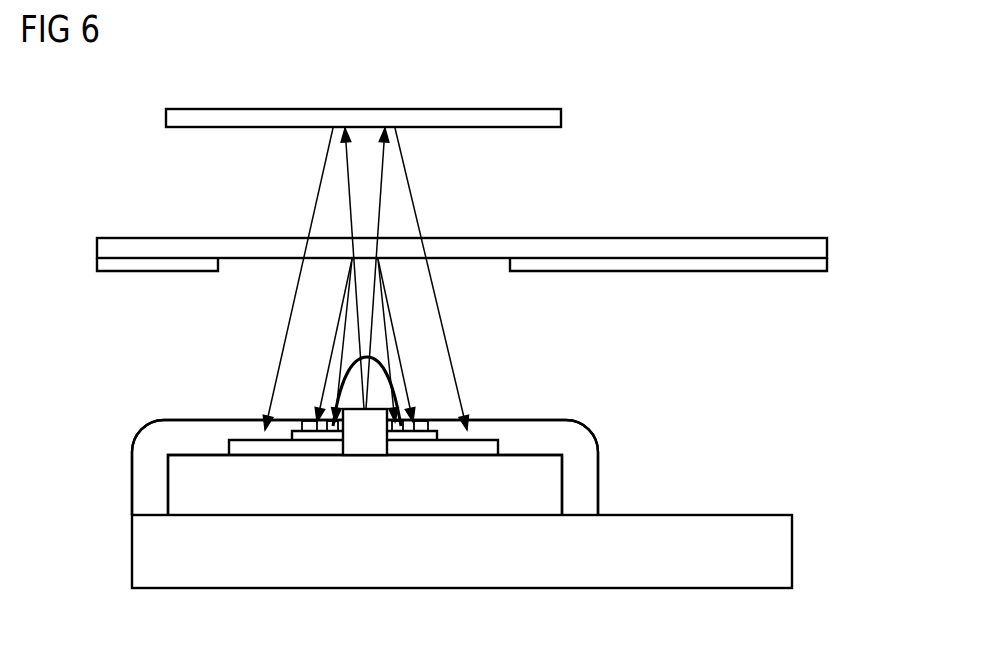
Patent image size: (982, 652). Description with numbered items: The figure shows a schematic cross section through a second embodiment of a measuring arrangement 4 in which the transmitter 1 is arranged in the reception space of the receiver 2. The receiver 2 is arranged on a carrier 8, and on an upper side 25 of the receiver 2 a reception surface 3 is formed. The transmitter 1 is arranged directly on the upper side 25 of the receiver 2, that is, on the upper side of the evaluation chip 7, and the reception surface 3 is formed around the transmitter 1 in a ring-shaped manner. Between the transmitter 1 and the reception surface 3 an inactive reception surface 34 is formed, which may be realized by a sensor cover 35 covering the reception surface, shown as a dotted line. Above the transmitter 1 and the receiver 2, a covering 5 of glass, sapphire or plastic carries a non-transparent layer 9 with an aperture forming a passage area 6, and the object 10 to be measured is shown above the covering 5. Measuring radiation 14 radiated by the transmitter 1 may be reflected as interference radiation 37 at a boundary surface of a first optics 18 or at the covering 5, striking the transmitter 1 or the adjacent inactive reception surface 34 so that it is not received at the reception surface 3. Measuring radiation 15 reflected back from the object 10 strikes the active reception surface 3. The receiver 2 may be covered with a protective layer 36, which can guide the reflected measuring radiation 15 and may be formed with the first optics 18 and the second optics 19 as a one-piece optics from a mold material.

The transmitter 1 is at (365, 441).
The receiver 2 is at (536, 506).
The reception surface 3 is at (242, 447).
The measuring arrangement 4 is at (833, 368).
The covering 5 is at (806, 246).
The passage area 6 is at (227, 272).
The evaluation chip 7 is at (365, 485).
The carrier 8 is at (786, 550).
The non-transparent layer 9 is at (97, 266).
The object 10 is at (568, 119).
The measuring radiation 14 is at (342, 167).
The reflected measuring radiation 15 is at (318, 192).
The first optics 18 is at (366, 366).
The second optics 19 is at (148, 484).
The upper side 25 is at (541, 451).
The inactive reception surface 34 is at (343, 458).
The sensor cover 35 is at (306, 420).
The protective layer 36 is at (365, 467).
The interference radiation 37 is at (340, 368).